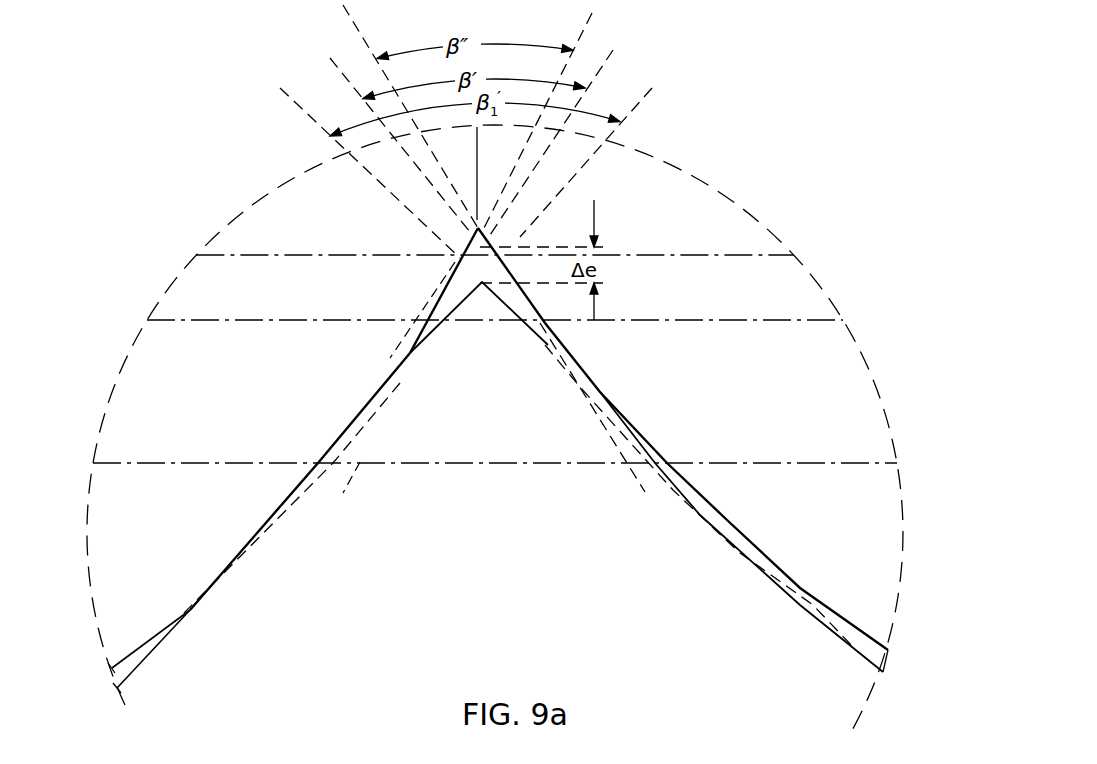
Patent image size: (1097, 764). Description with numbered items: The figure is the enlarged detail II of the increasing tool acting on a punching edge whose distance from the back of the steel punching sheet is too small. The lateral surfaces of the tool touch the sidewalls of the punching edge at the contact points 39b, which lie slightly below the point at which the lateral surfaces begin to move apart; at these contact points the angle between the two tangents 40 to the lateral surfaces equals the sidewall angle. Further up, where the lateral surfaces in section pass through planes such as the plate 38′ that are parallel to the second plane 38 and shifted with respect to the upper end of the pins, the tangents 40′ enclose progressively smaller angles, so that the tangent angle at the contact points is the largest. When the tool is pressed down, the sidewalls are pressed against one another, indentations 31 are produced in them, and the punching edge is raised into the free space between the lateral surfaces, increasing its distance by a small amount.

The detail II is at (831, 292).
The second plane 38 is at (208, 463).
The plate 38′ is at (270, 320).
The tangent 40 is at (635, 108).
The tangent 40′ is at (598, 78).
The contact point 39b is at (676, 446).
The indentation 31 is at (736, 537).